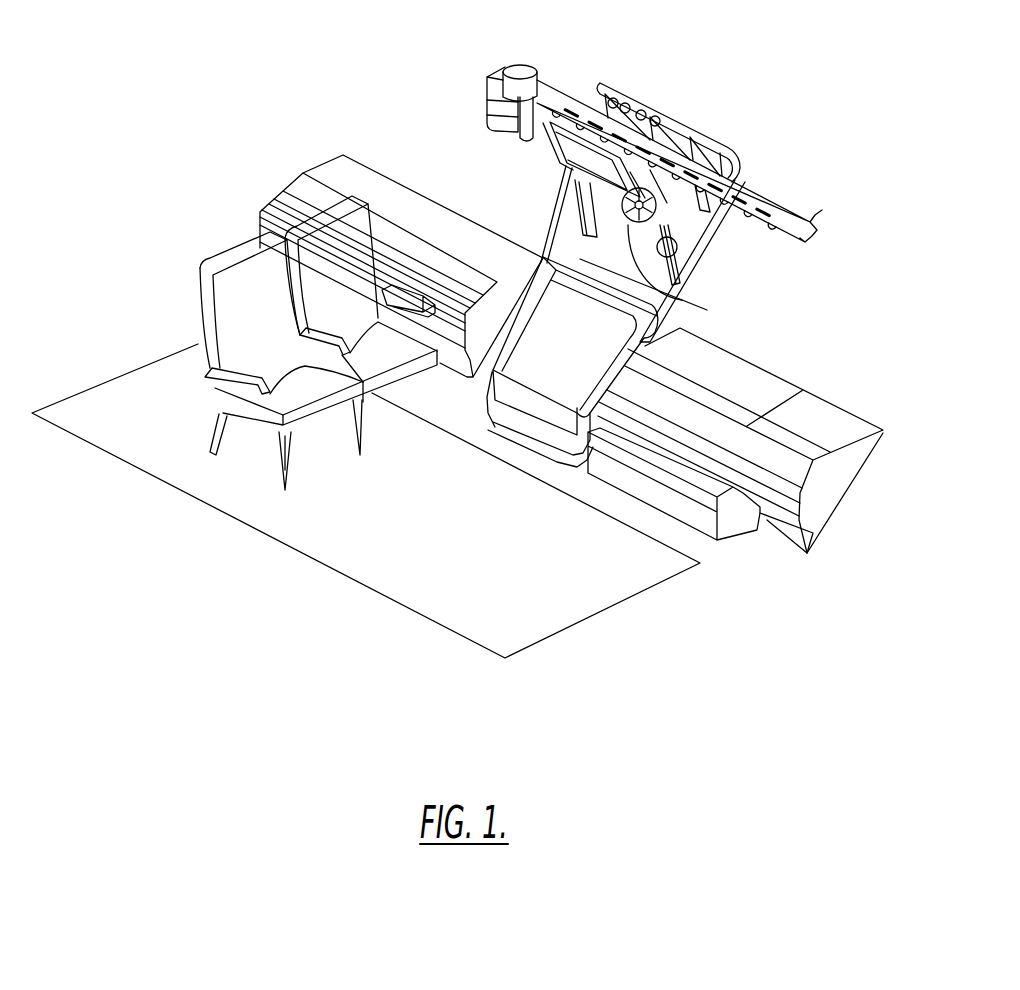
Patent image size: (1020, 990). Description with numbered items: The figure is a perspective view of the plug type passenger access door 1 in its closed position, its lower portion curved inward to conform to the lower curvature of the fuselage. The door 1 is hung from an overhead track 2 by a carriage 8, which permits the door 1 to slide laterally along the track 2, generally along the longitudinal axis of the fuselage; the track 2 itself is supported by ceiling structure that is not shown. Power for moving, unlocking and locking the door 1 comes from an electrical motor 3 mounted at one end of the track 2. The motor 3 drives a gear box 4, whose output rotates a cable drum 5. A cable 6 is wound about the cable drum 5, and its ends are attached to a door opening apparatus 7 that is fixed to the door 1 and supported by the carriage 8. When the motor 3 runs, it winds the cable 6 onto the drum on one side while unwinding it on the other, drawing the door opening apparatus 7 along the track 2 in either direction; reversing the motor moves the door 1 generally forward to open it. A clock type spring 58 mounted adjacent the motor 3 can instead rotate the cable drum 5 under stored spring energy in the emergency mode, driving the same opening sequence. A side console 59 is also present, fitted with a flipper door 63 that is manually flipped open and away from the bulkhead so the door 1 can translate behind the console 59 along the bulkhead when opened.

The plug type passenger access door 1 is at (737, 142).
The track 2 is at (763, 228).
The electrical motor 3 is at (527, 143).
The gear box 4 is at (503, 72).
The cable drum 5 is at (527, 66).
The cable 6 is at (487, 130).
The door opening apparatus 7 is at (683, 303).
The carriage 8 is at (633, 107).
The clock type spring 58 is at (487, 108).
The side console 59 is at (847, 407).
The flipper door 63 is at (760, 385).